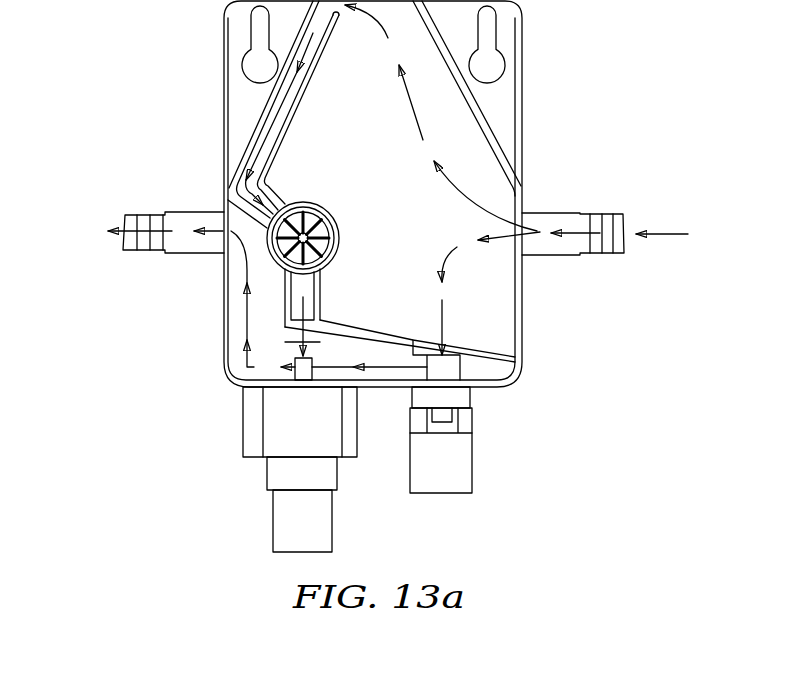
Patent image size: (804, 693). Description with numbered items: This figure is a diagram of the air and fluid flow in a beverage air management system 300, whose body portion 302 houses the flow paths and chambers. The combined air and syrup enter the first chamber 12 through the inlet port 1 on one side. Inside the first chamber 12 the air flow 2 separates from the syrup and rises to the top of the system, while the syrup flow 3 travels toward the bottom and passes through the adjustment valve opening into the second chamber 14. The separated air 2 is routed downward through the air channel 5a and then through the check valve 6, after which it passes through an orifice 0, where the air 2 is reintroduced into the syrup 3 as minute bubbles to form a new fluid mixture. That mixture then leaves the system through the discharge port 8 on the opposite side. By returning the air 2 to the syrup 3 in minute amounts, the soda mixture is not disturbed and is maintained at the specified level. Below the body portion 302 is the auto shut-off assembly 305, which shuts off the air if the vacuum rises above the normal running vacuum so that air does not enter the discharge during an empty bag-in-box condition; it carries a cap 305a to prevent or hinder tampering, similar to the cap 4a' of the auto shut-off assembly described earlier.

The beverage air management system 300 is at (159, 55).
The body portion 302 is at (523, 125).
The first chamber 12 is at (288, 133).
The air channel 5a is at (294, 98).
The air flow 2 is at (411, 120).
The syrup flow 3 is at (445, 267).
The discharge port 8 is at (131, 214).
The inlet port 1 is at (607, 214).
The check valve 6 is at (339, 235).
The orifice 0 is at (321, 300).
The second chamber 14 is at (492, 370).
The auto shut-off assembly 305 is at (240, 423).
The cap 305a is at (272, 522).
The cap of the auto shut-off assembly 4a' is at (484, 440).